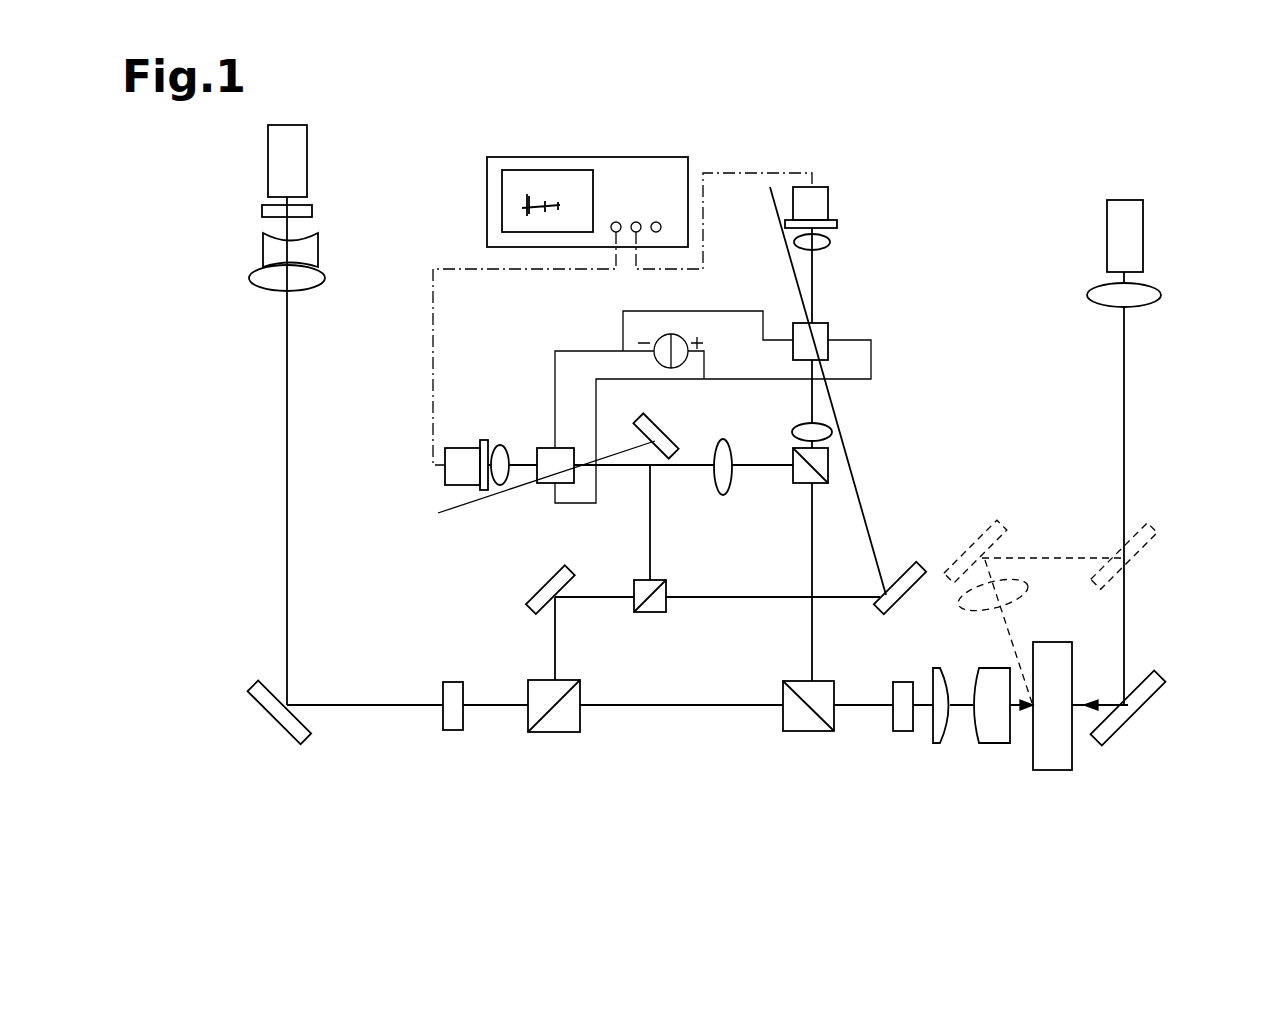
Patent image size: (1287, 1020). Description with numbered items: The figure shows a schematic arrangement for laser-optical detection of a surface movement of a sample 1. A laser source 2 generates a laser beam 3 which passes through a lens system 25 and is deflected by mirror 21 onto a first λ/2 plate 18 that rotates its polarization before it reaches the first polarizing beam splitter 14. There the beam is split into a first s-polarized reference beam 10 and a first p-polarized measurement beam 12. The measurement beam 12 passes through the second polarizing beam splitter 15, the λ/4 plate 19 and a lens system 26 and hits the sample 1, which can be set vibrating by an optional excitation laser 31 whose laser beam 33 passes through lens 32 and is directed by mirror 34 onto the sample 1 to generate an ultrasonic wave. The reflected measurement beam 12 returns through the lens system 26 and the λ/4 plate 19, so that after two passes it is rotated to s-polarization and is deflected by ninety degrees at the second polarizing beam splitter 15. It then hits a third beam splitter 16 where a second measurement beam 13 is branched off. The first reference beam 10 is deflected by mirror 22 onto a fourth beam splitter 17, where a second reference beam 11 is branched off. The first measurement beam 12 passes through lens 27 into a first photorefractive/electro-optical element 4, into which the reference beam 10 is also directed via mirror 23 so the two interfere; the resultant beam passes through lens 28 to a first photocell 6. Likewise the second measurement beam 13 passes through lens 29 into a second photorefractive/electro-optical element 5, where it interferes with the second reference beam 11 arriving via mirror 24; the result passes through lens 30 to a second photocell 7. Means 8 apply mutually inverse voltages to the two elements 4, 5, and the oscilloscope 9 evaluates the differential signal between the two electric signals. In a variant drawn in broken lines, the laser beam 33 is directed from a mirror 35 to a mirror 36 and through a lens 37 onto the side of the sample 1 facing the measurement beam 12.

The sample 1 is at (1060, 758).
The laser source 2 is at (274, 162).
The laser beam 3 is at (286, 461).
The first photorefractive/electro-optical element 4 is at (820, 328).
The second photorefractive/electro-optical element 5 is at (552, 483).
The means for converting light into a first electric signal 6 is at (820, 192).
The means for converting light into a second electric signal 7 is at (445, 478).
The means for applying mutually inverse voltages 8 is at (655, 358).
The means for evaluating the differential signal 9 is at (612, 165).
The first reference beam 10 is at (553, 640).
The second reference beam 11 is at (650, 520).
The first measurement beam 12 is at (668, 707).
The second measurement beam 13 is at (762, 468).
The first polarizing beam splitter 14 is at (555, 732).
The second polarizing beam splitter 15 is at (803, 731).
The third beam splitter 16 is at (822, 460).
The fourth beam splitter 17 is at (651, 612).
The first λ/2 plate 18 is at (453, 730).
The λ/4 plate 19 is at (901, 731).
The deflector mirror 21 is at (277, 710).
The deflector mirror 22 is at (540, 585).
The deflector mirror 23 is at (905, 590).
The deflector mirror 24 is at (670, 430).
The lens system 25 is at (246, 205).
The lens system 26 is at (925, 757).
The lens 27 is at (829, 432).
The lens 28 is at (830, 244).
The lens 29 is at (723, 497).
The lens 30 is at (500, 447).
The excitation laser 31 is at (1135, 226).
The lens 32 is at (1157, 292).
The laser beam 33 is at (1122, 432).
The mirror 34 is at (1150, 688).
The mirror 35 is at (1155, 530).
The mirror 36 is at (976, 545).
The lens 37 is at (1012, 595).